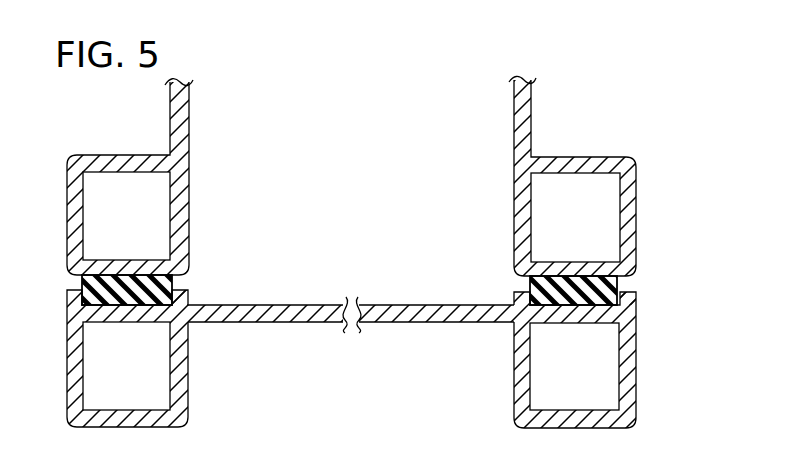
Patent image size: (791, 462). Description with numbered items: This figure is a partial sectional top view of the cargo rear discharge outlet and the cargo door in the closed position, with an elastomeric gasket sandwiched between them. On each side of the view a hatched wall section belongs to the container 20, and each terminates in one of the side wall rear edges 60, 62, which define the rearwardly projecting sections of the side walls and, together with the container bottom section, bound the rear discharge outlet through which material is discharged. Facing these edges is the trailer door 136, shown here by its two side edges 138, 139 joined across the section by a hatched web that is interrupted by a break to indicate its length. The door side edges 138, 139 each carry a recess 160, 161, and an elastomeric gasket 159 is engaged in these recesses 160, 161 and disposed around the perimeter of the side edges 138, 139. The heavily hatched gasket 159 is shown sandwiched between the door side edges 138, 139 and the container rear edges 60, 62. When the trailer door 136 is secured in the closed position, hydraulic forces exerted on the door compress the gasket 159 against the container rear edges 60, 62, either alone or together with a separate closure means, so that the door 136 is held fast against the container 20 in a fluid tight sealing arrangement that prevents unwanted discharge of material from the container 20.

The container 20 is at (158, 177).
The rear edge 60 is at (145, 262).
The rear edge 62 is at (587, 265).
The trailer door 136 is at (160, 347).
The side edge 138 is at (147, 316).
The side edge 139 is at (606, 349).
The elastomeric gasket 159 is at (160, 276).
The recess 160 is at (174, 285).
The recess 161 is at (622, 290).